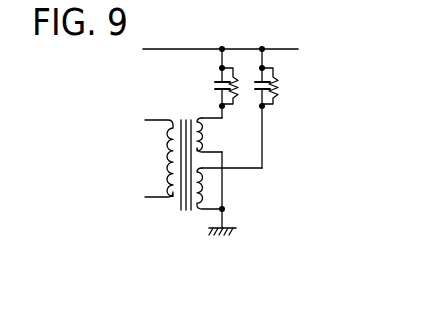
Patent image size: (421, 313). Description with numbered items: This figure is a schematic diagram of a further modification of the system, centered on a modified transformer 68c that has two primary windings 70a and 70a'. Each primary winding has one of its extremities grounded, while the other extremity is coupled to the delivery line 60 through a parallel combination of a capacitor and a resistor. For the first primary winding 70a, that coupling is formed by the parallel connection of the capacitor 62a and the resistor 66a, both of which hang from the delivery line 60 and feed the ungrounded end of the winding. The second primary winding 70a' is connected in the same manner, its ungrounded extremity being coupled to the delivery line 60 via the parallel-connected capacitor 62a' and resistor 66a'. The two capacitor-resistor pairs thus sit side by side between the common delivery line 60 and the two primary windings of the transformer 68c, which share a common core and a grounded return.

The delivery line 60 is at (174, 47).
The capacitor 62a is at (198, 83).
The capacitor 62a' is at (255, 87).
The resistor 66a is at (234, 107).
The resistor 66a' is at (300, 86).
The modified transformer 68c is at (174, 206).
The primary winding 70a is at (194, 118).
The primary winding 70a' is at (196, 205).